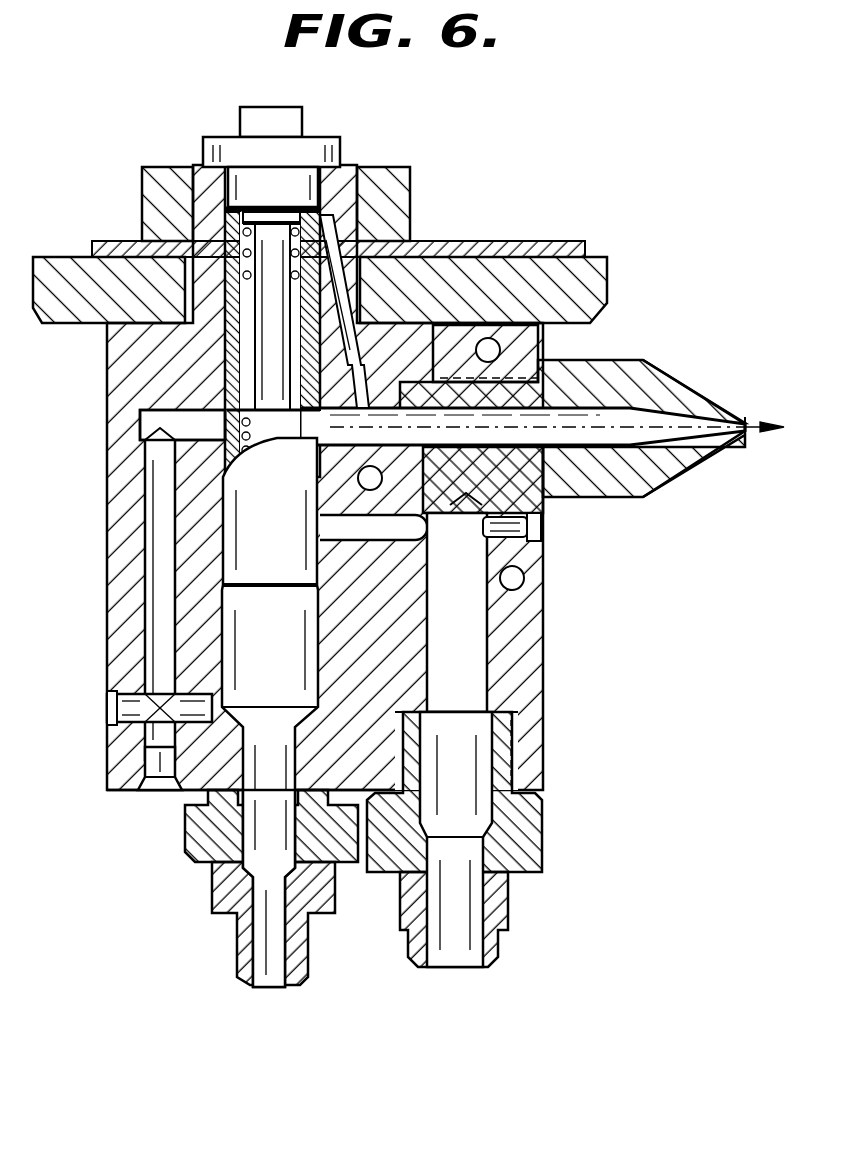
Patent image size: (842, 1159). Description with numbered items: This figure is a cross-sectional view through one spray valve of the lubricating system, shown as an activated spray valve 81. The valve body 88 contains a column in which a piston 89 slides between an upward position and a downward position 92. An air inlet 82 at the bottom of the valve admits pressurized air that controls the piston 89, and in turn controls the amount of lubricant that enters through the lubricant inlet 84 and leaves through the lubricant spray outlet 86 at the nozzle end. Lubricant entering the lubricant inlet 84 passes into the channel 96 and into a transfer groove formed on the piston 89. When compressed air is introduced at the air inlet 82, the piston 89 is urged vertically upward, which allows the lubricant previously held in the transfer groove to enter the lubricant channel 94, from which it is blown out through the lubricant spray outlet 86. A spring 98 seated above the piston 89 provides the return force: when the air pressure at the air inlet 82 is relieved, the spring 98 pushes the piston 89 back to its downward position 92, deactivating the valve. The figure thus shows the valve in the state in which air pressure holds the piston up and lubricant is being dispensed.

The activated spray valve 81 is at (112, 208).
The air inlet 82 is at (268, 987).
The lubricant inlet 84 is at (453, 967).
The lubricant spray outlet 86 is at (748, 432).
The valve body 88 is at (205, 377).
The piston 89 is at (129, 591).
The downward position 92 is at (322, 418).
The lubricant channel 94 is at (376, 410).
The channel 96 is at (366, 527).
The spring 98 is at (243, 418).